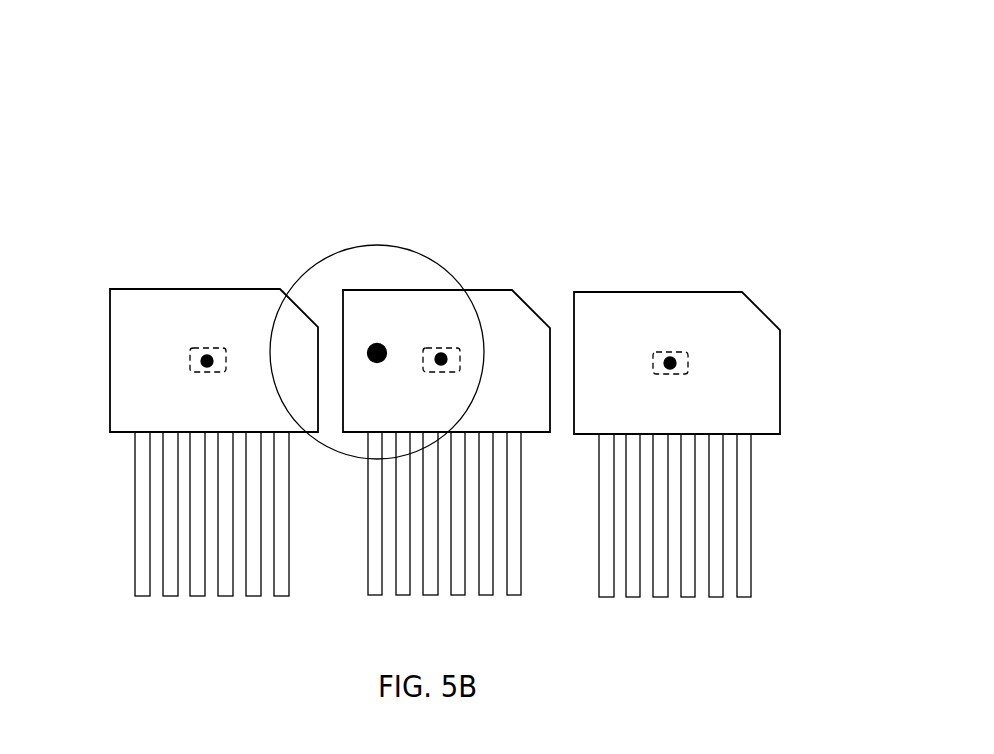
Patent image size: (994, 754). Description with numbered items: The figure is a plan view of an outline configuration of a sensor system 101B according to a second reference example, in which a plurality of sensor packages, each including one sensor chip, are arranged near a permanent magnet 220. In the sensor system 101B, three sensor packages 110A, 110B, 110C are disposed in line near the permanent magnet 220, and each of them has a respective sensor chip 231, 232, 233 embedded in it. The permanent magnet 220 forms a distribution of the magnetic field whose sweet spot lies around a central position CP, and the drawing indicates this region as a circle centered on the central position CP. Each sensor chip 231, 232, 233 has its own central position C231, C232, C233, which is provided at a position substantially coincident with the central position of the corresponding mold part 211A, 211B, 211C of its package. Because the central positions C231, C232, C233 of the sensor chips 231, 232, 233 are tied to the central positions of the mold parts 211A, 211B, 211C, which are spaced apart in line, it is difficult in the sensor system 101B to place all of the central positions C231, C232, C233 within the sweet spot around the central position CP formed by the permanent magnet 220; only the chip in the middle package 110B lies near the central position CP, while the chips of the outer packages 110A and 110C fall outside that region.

The sensor system 101B is at (652, 120).
The sensor package 110A is at (142, 230).
The sensor package 110B is at (520, 252).
The sensor package 110C is at (767, 258).
The mold part 211A is at (270, 412).
The mold part 211B is at (488, 410).
The mold part 211C is at (760, 403).
The permanent magnet 220 is at (377, 243).
The central position CP is at (376, 343).
The sensor chip 231 is at (207, 352).
The sensor chip 232 is at (441, 352).
The sensor chip 233 is at (670, 356).
The central position C231 is at (203, 366).
The central position C232 is at (438, 367).
The central position C233 is at (667, 370).